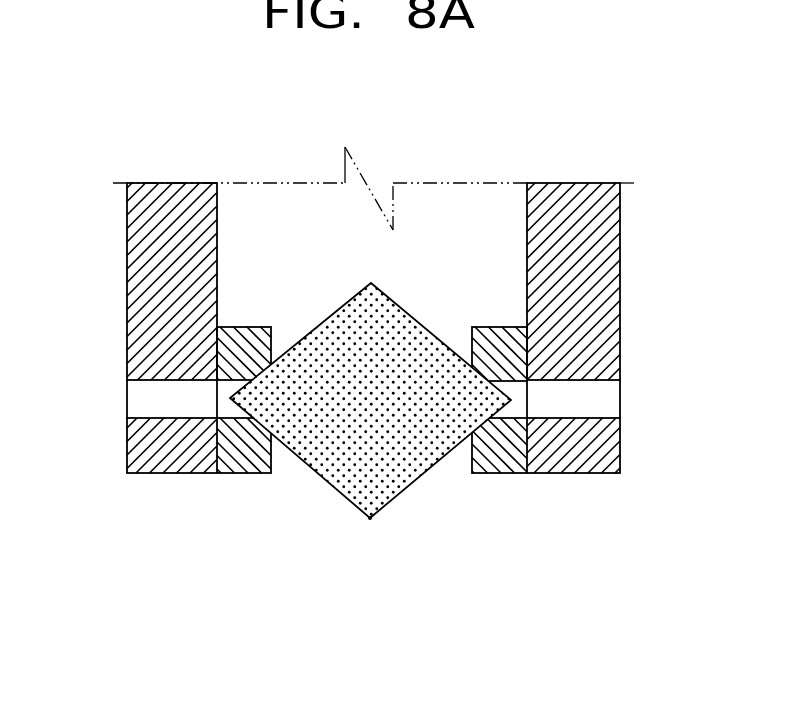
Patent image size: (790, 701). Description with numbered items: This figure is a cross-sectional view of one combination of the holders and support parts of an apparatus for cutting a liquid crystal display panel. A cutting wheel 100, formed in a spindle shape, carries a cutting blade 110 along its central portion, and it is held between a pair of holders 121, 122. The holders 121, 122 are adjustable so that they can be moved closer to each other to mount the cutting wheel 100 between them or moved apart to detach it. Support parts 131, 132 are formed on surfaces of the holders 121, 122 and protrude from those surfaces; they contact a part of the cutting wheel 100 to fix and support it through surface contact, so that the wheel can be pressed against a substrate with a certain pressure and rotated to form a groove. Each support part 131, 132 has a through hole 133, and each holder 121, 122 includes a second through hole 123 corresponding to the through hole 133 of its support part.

The cutting wheel 100 is at (345, 482).
The cutting blade 110 is at (373, 522).
The holder 121 is at (138, 272).
The holder 122 is at (610, 275).
The second through hole 123 is at (154, 398).
The support part 131 is at (228, 346).
The support part 132 is at (516, 348).
The through hole 133 is at (225, 398).